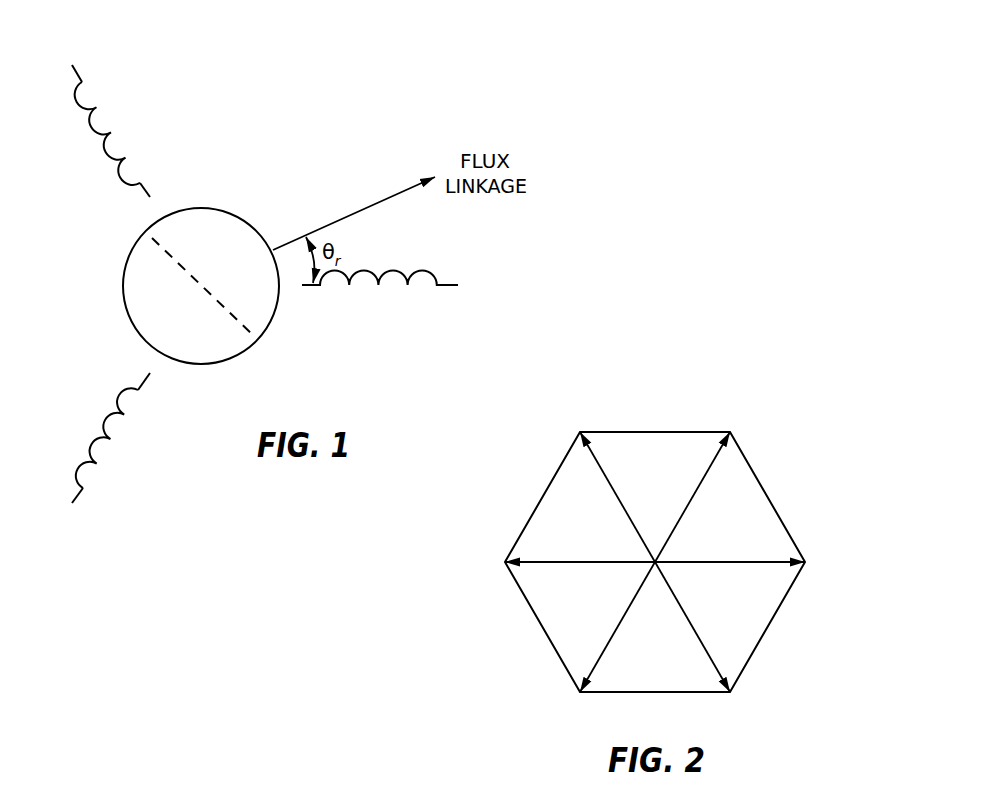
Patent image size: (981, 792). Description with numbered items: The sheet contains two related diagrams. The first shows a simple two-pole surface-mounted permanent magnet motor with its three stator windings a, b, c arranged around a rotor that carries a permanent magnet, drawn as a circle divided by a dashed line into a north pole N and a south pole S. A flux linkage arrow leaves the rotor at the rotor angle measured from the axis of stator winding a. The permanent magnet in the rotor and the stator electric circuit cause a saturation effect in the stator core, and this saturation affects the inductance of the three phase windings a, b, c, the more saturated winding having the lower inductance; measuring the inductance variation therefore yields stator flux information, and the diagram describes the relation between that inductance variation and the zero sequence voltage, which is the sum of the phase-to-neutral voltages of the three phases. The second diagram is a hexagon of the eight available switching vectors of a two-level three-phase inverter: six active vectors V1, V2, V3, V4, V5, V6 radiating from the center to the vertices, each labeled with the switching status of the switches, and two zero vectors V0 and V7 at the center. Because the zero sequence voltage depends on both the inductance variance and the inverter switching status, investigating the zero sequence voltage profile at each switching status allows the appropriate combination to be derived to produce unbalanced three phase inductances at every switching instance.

In FIG. 1, the stator winding a is at (390, 283).
In FIG. 1, the stator winding b is at (103, 119).
In FIG. 1, the stator winding c is at (105, 451).
In FIG. 1, the north pole of permanent magnet N is at (201, 286).
In FIG. 1, the south pole of permanent magnet S is at (182, 305).
In FIG. 2, the switching vector V0 is at (726, 549).
In FIG. 2, the switching vector V1 is at (702, 564).
In FIG. 2, the switching vector V2 is at (717, 485).
In FIG. 2, the switching vector V3 is at (593, 485).
In FIG. 2, the switching vector V4 is at (452, 564).
In FIG. 2, the switching vector V5 is at (593, 644).
In FIG. 2, the switching vector V6 is at (717, 644).
In FIG. 2, the switching vector V7 is at (726, 581).